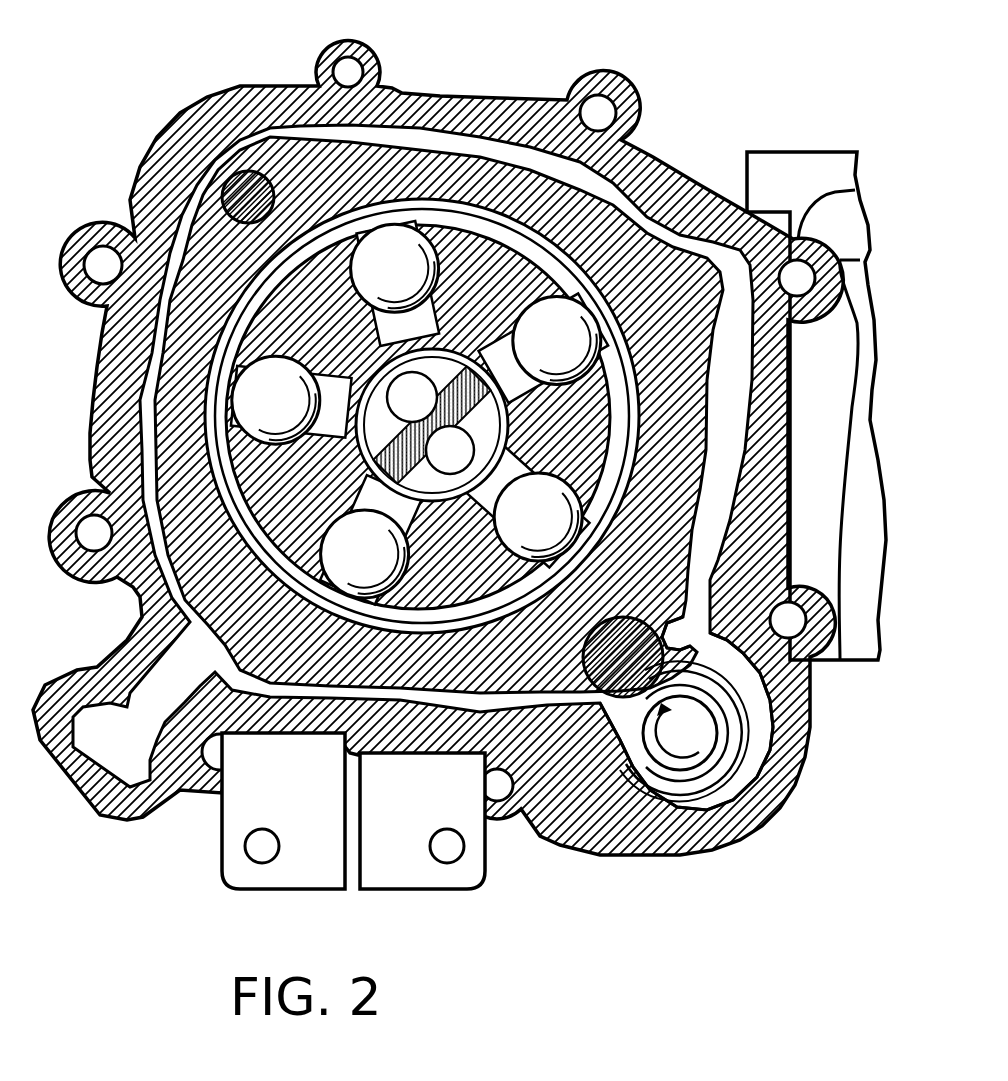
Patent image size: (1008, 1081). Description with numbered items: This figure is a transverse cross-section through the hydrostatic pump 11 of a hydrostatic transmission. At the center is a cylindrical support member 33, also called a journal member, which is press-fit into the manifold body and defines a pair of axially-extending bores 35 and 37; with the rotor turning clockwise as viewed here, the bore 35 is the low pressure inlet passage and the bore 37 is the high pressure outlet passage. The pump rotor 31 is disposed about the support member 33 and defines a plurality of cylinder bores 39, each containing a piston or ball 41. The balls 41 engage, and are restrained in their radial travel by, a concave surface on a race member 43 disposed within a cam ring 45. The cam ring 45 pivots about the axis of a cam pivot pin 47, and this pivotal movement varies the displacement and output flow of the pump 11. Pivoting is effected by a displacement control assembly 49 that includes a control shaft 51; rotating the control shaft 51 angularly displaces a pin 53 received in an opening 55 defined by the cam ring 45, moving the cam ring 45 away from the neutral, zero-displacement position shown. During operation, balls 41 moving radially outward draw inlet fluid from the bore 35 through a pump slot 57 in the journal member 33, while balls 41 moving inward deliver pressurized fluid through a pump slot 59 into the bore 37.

The hydrostatic pump 11 is at (240, 78).
The cam ring 45 is at (480, 165).
The cam pivot pin 47 is at (272, 197).
The pump rotor 31 is at (500, 265).
The axial bore (low pressure inlet passage) 35 is at (375, 355).
The pump slot 57 is at (372, 392).
The axial bore (high pressure outlet passage) 37 is at (450, 450).
The cylindrical support member 33 is at (358, 478).
The pump slot 59 is at (445, 483).
The race member 43 is at (608, 538).
The cylinder bores 39 is at (420, 558).
The ball 41 is at (352, 594).
The opening 55 is at (658, 616).
The pin 53 is at (585, 688).
The control shaft 51 is at (713, 733).
The displacement control assembly 49 is at (590, 782).